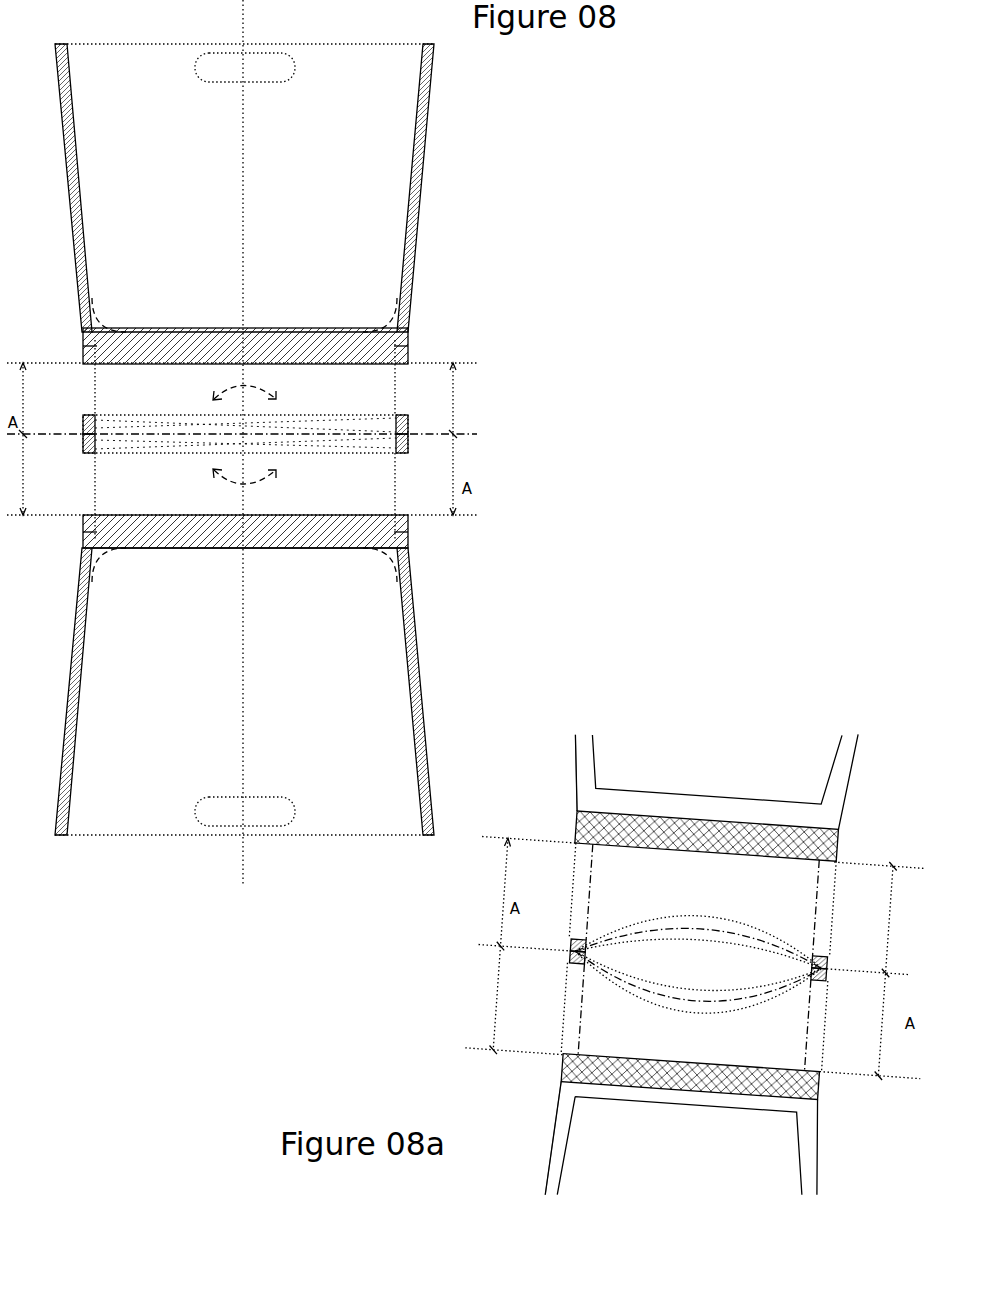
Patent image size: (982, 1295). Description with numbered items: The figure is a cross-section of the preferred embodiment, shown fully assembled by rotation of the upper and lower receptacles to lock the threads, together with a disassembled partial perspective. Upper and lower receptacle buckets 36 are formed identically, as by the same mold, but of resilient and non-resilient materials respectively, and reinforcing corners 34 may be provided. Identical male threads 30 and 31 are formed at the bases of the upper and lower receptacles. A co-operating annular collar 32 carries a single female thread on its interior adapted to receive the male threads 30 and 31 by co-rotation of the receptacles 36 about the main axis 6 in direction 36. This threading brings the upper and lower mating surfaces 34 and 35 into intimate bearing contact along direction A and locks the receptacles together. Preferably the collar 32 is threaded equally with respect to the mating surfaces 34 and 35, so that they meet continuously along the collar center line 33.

In FIG. 08, the main axis 6 is at (244, 451).
In FIG. 08A, the main axis 6 is at (701, 950).
In FIG. 08, the male thread 30 is at (291, 346).
In FIG. 08, the male thread 31 is at (285, 534).
In FIG. 08, the annular collar 32 is at (293, 414).
In FIG. 08A, the annular collar 32 is at (635, 933).
In FIG. 08, the collar center line 33 is at (300, 454).
In FIG. 08A, the collar center line 33 is at (624, 981).
In FIG. 08, the upper mating surface 34 is at (245, 441).
In FIG. 08A, the upper mating surface 34 is at (720, 901).
In FIG. 08, the lower mating surface 35 is at (245, 496).
In FIG. 08A, the lower mating surface 35 is at (719, 1019).
In FIG. 08, the receptacle bucket 36 is at (347, 435).
In FIG. 08A, the receptacle bucket 36 is at (603, 968).